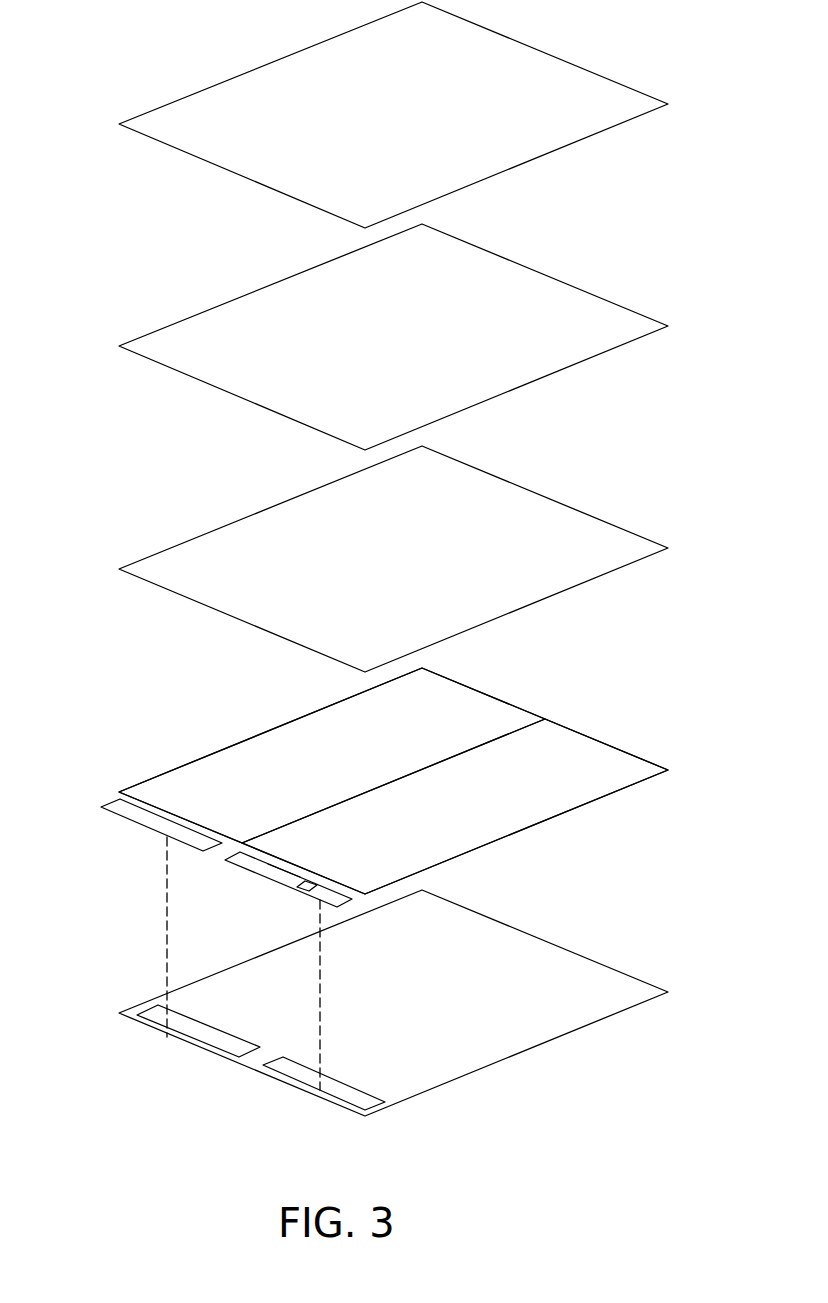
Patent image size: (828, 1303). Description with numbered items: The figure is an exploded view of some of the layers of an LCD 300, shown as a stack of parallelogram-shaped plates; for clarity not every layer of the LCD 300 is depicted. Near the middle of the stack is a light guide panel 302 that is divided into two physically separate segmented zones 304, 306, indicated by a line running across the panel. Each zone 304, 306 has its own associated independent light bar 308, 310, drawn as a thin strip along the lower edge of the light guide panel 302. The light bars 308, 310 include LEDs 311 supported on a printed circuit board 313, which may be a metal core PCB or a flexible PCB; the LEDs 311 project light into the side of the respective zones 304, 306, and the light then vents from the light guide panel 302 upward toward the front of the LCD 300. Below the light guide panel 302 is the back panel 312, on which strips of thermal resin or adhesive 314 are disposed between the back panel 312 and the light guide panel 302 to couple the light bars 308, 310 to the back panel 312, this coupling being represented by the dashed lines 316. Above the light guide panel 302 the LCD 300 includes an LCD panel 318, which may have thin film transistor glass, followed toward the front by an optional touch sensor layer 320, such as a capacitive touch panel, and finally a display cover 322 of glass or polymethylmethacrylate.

The LCD 300 is at (383, 594).
The light guide panel 302 is at (602, 802).
The segmented zone 304 is at (472, 708).
The segmented zone 306 is at (575, 752).
The light bar 308 is at (150, 827).
The light bar 310 is at (243, 867).
The LEDs 311 is at (308, 893).
The printed circuit board 313 is at (287, 877).
The back panel 312 is at (580, 955).
The thermal resin or adhesive 314 is at (188, 1035).
The dashed lines 316 is at (167, 930).
The LCD panel 318 is at (206, 584).
The touch sensor layer 320 is at (210, 367).
The display cover 322 is at (187, 133).